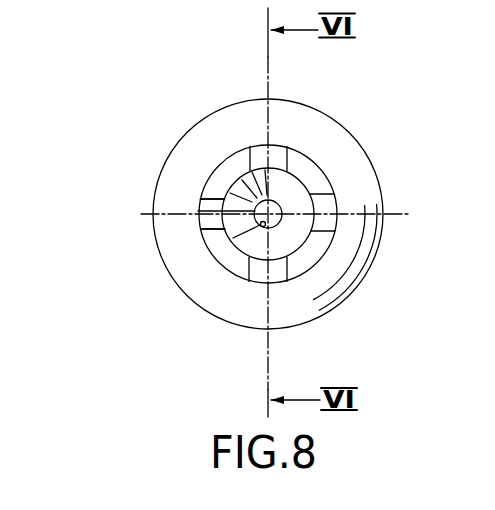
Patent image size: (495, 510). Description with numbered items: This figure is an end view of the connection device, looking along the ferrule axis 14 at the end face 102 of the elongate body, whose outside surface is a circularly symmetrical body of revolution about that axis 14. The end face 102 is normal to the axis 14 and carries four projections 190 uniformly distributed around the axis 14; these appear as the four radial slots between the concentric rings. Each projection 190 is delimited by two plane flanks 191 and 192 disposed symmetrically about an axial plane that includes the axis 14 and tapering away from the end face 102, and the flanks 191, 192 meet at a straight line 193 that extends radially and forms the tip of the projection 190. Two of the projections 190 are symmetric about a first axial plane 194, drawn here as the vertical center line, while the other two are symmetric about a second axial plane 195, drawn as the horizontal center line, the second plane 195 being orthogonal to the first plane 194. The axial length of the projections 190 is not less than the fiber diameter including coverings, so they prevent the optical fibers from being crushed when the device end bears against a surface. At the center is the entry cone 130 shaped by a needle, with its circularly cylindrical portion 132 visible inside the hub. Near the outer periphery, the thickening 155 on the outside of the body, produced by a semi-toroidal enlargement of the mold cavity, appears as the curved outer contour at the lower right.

The axis 14 is at (272, 212).
The end face 102 is at (228, 170).
The entry cone 130 is at (250, 248).
The circularly cylindrical portion 132 is at (261, 227).
The thickening 155 is at (349, 128).
The projection 190 is at (280, 149).
The plane flank 191 is at (200, 199).
The plane flank 192 is at (201, 229).
The straight line 193 is at (198, 211).
The first axial plane 194 is at (271, 60).
The second axial plane 195 is at (406, 214).